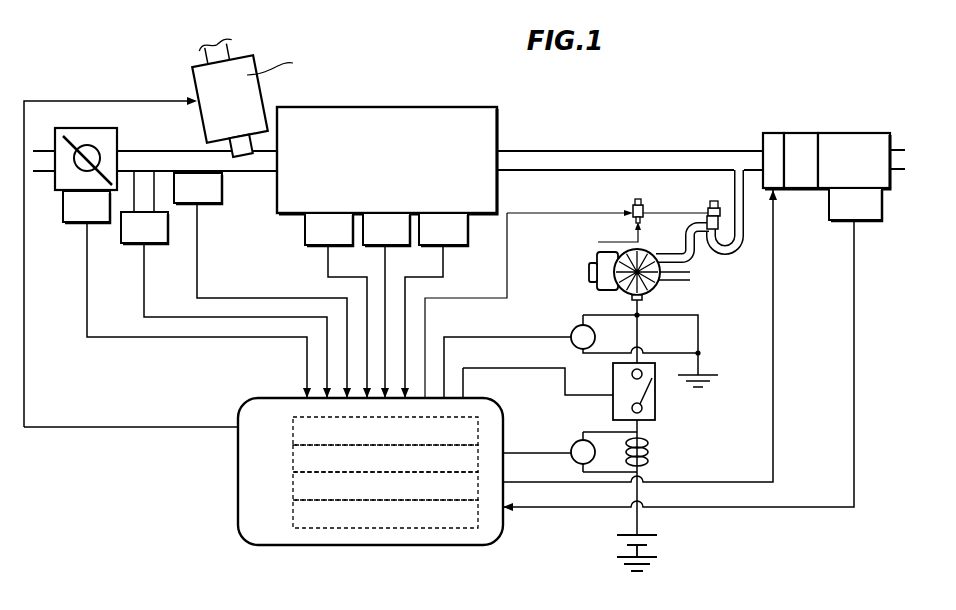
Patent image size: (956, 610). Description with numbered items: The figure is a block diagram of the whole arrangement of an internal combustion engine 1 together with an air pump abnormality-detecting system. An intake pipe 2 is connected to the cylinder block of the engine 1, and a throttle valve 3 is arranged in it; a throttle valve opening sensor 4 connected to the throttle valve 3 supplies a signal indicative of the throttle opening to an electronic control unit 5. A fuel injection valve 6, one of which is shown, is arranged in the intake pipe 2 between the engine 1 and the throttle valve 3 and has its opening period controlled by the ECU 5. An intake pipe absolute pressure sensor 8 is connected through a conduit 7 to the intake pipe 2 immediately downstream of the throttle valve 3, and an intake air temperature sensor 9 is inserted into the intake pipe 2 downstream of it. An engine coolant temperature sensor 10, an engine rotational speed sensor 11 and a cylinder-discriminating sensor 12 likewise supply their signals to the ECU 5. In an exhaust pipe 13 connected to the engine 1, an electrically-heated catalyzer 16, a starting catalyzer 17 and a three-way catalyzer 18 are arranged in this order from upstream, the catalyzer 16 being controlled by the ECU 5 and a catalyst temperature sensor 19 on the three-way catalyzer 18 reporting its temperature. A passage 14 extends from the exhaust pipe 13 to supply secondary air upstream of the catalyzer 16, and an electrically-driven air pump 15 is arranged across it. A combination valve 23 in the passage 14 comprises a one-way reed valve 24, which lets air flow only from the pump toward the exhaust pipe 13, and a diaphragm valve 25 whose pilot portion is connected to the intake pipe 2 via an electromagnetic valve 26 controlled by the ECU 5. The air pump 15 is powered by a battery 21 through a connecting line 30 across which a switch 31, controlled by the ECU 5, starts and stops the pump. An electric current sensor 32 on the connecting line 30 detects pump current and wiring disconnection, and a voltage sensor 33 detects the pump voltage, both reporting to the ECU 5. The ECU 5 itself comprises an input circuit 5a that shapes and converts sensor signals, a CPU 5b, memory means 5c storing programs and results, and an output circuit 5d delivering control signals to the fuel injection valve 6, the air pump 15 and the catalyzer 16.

The internal combustion engine 1 is at (447, 107).
The intake pipe 2 is at (162, 150).
The throttle valve 3 is at (75, 135).
The throttle valve opening sensor 4 is at (93, 225).
The electronic control unit 5 is at (353, 448).
The input circuit 5a is at (293, 428).
The central processing unit 5b is at (293, 453).
The memory means 5c is at (293, 487).
The output circuit 5d is at (293, 517).
The fuel injection valve 6 is at (258, 82).
The conduit 7 is at (155, 187).
The intake pipe absolute pressure sensor 8 is at (150, 244).
The intake air temperature sensor 9 is at (210, 205).
The engine coolant temperature sensor 10 is at (320, 248).
The engine rotational speed sensor 11 is at (375, 248).
The cylinder-discriminating sensor 12 is at (456, 248).
The exhaust pipe 13 is at (527, 151).
The passage 14 is at (732, 258).
The air pump 15 is at (606, 291).
The electrically-heated catalyzer 16 is at (771, 133).
The starting catalyzer 17 is at (806, 133).
The three-way catalyzer 18 is at (853, 133).
The catalyst temperature sensor 19 is at (866, 222).
The battery 21 is at (655, 542).
The combination valve 23 is at (712, 205).
The one-way reed valve 24 is at (722, 226).
The diaphragm valve 25 is at (706, 208).
The electromagnetic valve 26 is at (633, 200).
The connecting line 30 is at (640, 520).
The switch 31 is at (656, 396).
The electric current sensor 32 is at (575, 441).
The voltage sensor 33 is at (572, 326).